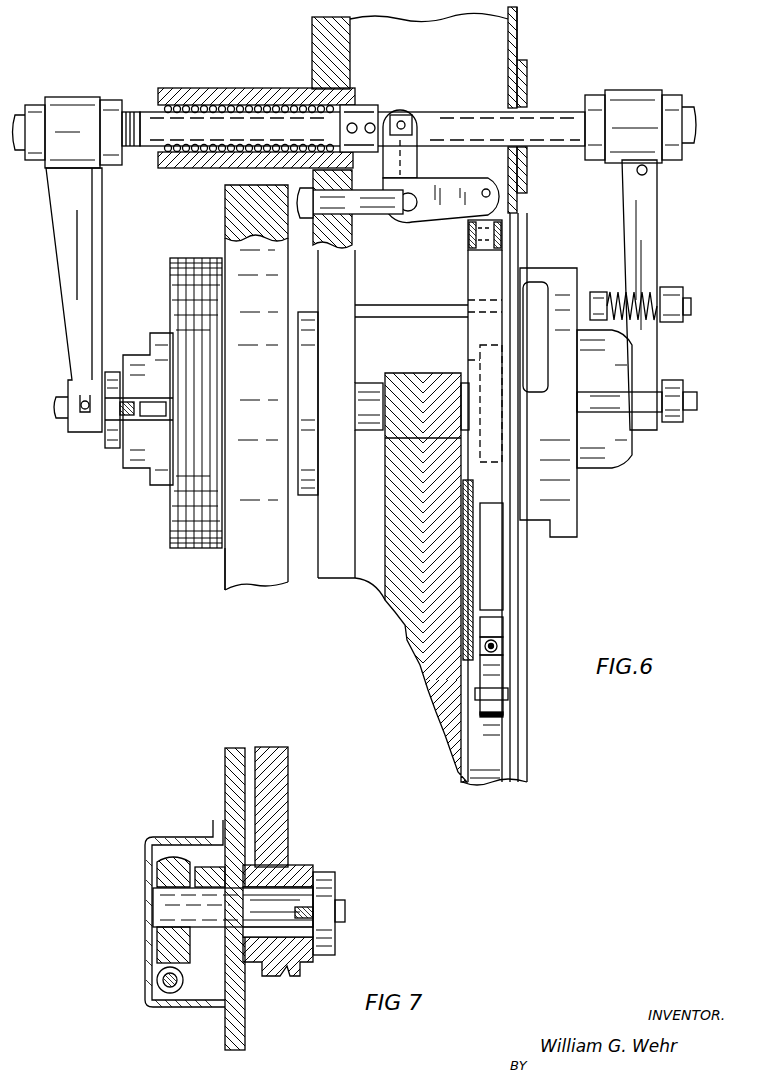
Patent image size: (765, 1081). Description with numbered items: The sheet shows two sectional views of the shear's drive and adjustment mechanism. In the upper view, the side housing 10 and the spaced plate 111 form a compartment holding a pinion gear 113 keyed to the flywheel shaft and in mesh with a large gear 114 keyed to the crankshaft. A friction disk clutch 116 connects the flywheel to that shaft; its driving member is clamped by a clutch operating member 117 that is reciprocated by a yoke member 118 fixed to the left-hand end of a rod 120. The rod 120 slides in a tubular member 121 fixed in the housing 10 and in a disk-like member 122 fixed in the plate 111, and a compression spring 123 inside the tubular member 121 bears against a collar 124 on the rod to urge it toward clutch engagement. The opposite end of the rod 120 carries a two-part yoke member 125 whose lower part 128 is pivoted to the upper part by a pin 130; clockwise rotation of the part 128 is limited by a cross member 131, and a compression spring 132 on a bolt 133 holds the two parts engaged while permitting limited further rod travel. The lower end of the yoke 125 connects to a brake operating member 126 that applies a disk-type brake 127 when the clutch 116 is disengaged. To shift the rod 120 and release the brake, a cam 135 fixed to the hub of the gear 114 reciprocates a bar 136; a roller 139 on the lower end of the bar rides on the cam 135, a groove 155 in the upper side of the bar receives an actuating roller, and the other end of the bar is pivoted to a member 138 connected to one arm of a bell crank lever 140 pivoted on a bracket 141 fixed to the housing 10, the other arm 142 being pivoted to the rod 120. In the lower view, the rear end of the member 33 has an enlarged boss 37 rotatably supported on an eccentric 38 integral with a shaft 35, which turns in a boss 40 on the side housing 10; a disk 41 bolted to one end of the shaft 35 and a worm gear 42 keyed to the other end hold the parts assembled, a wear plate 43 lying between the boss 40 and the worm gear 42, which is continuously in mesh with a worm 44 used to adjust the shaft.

In FIG. 6, the side housing 10 is at (313, 38).
In FIG. 7, the side housing 10 is at (228, 770).
In FIG. 6, the plate 111 is at (516, 40).
In FIG. 6, the disk-like member 122 is at (527, 82).
In FIG. 6, the rod 120 is at (140, 118).
In FIG. 6, the compression spring 123 is at (205, 100).
In FIG. 6, the tubular member 121 is at (252, 94).
In FIG. 6, the collar 124 is at (366, 112).
In FIG. 6, the arm of bell crank lever 142 is at (418, 132).
In FIG. 6, the bracket 141 is at (388, 216).
In FIG. 6, the bell crank lever 140 is at (447, 222).
In FIG. 6, the member 138 is at (470, 240).
In FIG. 6, the bar 136 is at (480, 323).
In FIG. 6, the pinion gear 113 is at (408, 384).
In FIG. 6, the large gear 114 is at (405, 626).
In FIG. 6, the yoke member 118 is at (67, 275).
In FIG. 6, the clutch operating member 117 is at (108, 450).
In FIG. 6, the friction disk clutch 116 is at (183, 532).
In FIG. 6, the groove 155 is at (492, 578).
In FIG. 6, the roller 139 is at (495, 702).
In FIG. 6, the cam 135 is at (500, 750).
In FIG. 6, the disk-type brake 127 is at (582, 500).
In FIG. 6, the lower part of yoke 128 is at (652, 357).
In FIG. 6, the brake operating member 126 is at (650, 420).
In FIG. 6, the two-part yoke member 125 is at (628, 232).
In FIG. 6, the pin 130 is at (648, 171).
In FIG. 6, the bolt 133 is at (610, 294).
In FIG. 6, the compression spring 132 is at (620, 288).
In FIG. 6, the cross member 131 is at (662, 292).
In FIG. 7, the boss 40 is at (210, 862).
In FIG. 7, the member 33 is at (280, 790).
In FIG. 7, the enlarged boss 37 is at (295, 958).
In FIG. 7, the eccentric 38 is at (285, 897).
In FIG. 7, the shaft 35 is at (225, 915).
In FIG. 7, the disk 41 is at (347, 912).
In FIG. 7, the wear plate 43 is at (160, 870).
In FIG. 7, the worm gear 42 is at (160, 945).
In FIG. 7, the worm 44 is at (160, 995).